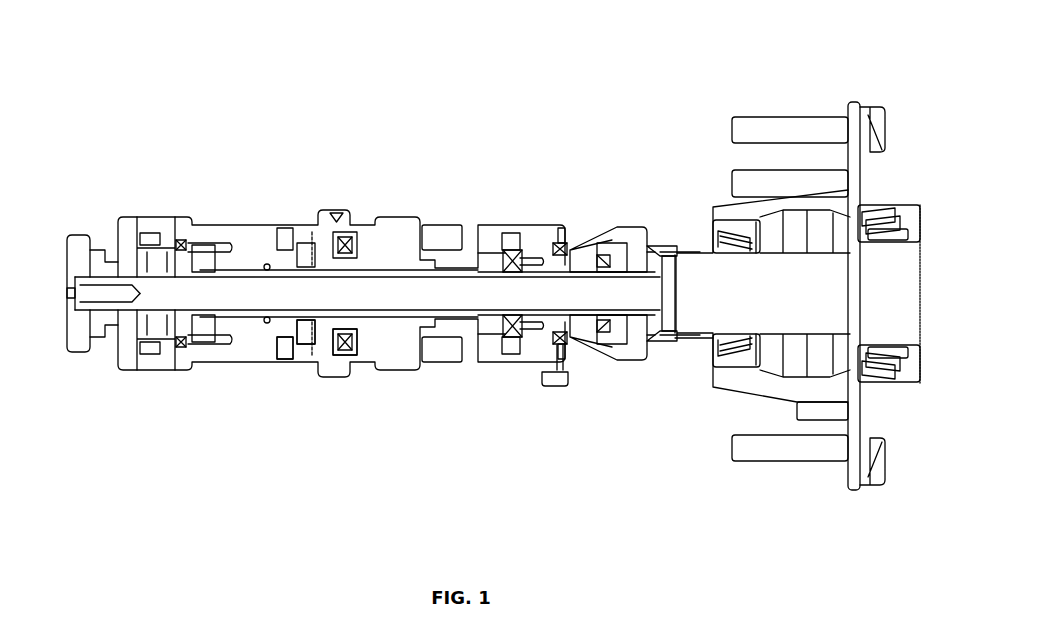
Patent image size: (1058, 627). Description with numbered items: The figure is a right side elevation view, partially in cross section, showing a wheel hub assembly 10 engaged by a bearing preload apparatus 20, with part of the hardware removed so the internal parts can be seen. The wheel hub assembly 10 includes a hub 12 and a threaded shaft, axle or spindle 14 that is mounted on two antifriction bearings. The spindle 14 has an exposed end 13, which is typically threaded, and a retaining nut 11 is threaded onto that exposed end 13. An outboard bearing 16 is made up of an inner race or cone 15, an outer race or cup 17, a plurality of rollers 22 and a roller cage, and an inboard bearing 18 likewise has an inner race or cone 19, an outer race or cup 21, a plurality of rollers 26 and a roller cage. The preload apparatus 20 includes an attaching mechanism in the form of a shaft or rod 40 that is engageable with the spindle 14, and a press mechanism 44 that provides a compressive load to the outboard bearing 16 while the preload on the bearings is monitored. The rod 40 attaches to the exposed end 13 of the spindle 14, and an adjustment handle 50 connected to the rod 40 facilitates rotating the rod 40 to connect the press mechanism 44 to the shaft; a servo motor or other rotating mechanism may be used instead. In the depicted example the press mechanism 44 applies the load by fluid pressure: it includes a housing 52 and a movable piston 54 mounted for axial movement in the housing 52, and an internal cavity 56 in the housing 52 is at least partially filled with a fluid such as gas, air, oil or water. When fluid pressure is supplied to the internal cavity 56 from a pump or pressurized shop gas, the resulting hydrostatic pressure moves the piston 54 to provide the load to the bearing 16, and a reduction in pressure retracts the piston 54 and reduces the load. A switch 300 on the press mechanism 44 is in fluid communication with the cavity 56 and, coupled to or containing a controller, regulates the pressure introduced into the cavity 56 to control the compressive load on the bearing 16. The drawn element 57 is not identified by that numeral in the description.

The wheel hub assembly 10 is at (502, 259).
The retaining nut 11 is at (705, 345).
The hub 12 is at (858, 100).
The exposed end 13 is at (677, 288).
The spindle 14 is at (805, 264).
The inner race 15 is at (720, 250).
The outboard bearing 16 is at (760, 247).
The outer race 17 is at (738, 227).
The inboard bearing 18 is at (910, 277).
The inner race 19 is at (897, 235).
The bearing preload apparatus 20 is at (350, 255).
The outer race 21 is at (870, 212).
The rollers 22 is at (720, 248).
The rollers 26 is at (865, 228).
The rod 40 is at (408, 300).
The press mechanism 44 is at (433, 417).
The adjustment handle 50 is at (80, 355).
The housing 52 is at (312, 242).
The piston 54 is at (312, 338).
The internal cavity 56 is at (303, 245).
The spacer 57 is at (328, 345).
The switch 300 is at (333, 210).